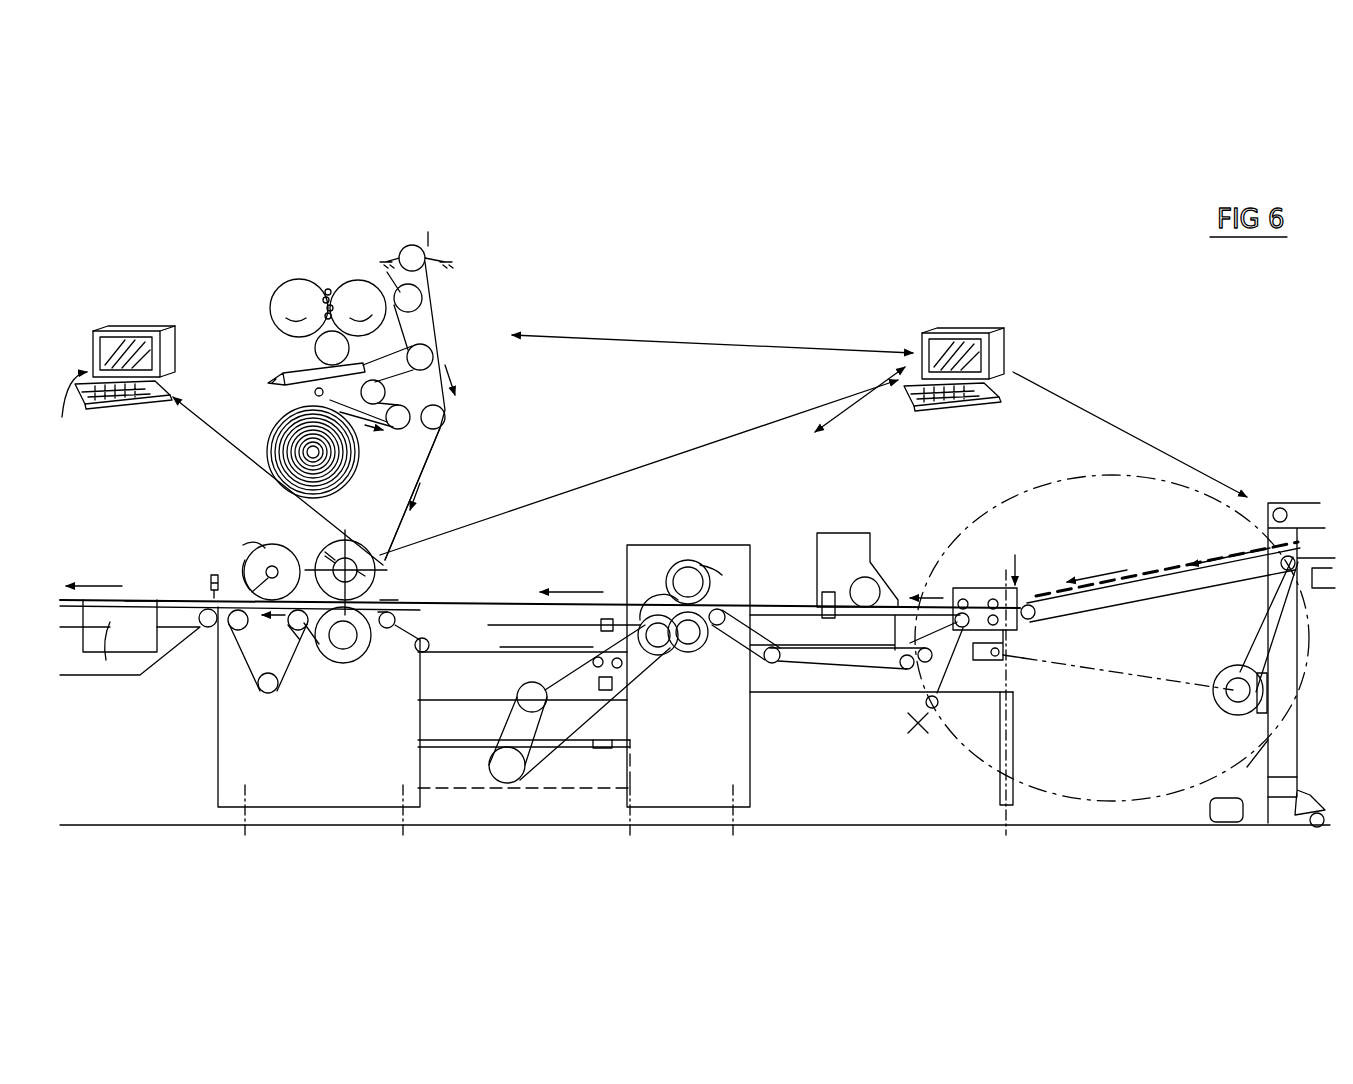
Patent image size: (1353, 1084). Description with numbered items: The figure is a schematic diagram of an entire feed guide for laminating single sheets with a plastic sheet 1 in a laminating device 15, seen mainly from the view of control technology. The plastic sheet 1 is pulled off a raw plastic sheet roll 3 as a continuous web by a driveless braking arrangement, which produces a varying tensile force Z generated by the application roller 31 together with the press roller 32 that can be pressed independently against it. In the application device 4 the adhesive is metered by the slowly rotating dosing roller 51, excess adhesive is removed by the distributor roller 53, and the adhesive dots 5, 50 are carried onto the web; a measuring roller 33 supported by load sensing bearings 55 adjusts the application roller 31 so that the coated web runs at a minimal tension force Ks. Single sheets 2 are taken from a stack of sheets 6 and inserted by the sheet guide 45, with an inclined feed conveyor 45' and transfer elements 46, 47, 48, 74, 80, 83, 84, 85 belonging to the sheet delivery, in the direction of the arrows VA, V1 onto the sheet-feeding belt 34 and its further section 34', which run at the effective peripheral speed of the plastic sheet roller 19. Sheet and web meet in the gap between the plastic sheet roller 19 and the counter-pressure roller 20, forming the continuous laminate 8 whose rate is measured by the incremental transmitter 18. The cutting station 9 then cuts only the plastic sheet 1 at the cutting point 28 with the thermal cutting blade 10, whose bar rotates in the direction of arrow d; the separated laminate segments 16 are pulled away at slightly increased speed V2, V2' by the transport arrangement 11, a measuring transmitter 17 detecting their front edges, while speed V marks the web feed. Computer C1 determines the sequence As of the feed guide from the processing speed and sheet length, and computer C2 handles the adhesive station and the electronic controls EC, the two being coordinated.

The plastic sheet 1 is at (435, 330).
The single sheets 2 is at (1112, 638).
The raw plastic sheet roll 3 is at (270, 425).
The application device 4 is at (296, 215).
The adhesive applicator 5 is at (338, 271).
The adhesive applicator nozzle 50 is at (328, 282).
The stack of sheets 6 is at (1328, 762).
The continuous laminate 8 is at (300, 655).
The cutting station 9 is at (307, 644).
The cutting blade 10 is at (175, 390).
The transport arrangement 11 is at (103, 620).
The laminating device 15 is at (493, 453).
The laminate segments 16 is at (155, 598).
The measuring transmitter 17 is at (209, 580).
The incremental transmitter 18 is at (385, 570).
The plastic sheet roller 19 is at (377, 555).
The counter-pressure roller 20 is at (360, 655).
The cutting point 28 is at (388, 600).
The application roller 31 is at (323, 280).
The press roller 32 is at (424, 300).
The measuring roller 33 is at (428, 246).
The sheet-feeding belt 34 is at (544, 653).
The transport section 34' is at (881, 678).
The sheet guide 45 is at (1221, 720).
The inclined conveyor 45' is at (1160, 588).
The transfer unit 46 is at (1000, 552).
The pressing device 47 is at (835, 528).
The folding station 48 is at (683, 520).
The dosing roller 51 is at (273, 296).
The distributor roller 53 is at (318, 351).
The load sensing bearings 55 is at (450, 263).
The pivot point 74 is at (913, 734).
The control unit 80 is at (984, 696).
The axis line 83 is at (1107, 673).
The drive roller 84 is at (1236, 684).
The pivot 85 is at (1003, 660).
The computer C1 is at (1045, 370).
The computer C2 is at (186, 322).
The tension force Ks is at (470, 367).
The speed V is at (320, 531).
The processing speed V1 is at (432, 497).
The speed V2 is at (94, 569).
The speed V2' is at (271, 637).
The feed direction arrow VA is at (1097, 563).
The tensile force Z is at (377, 449).
The rotation direction arrow d is at (255, 543).
The sequence As is at (1230, 542).
The electronic controls EC is at (1075, 456).